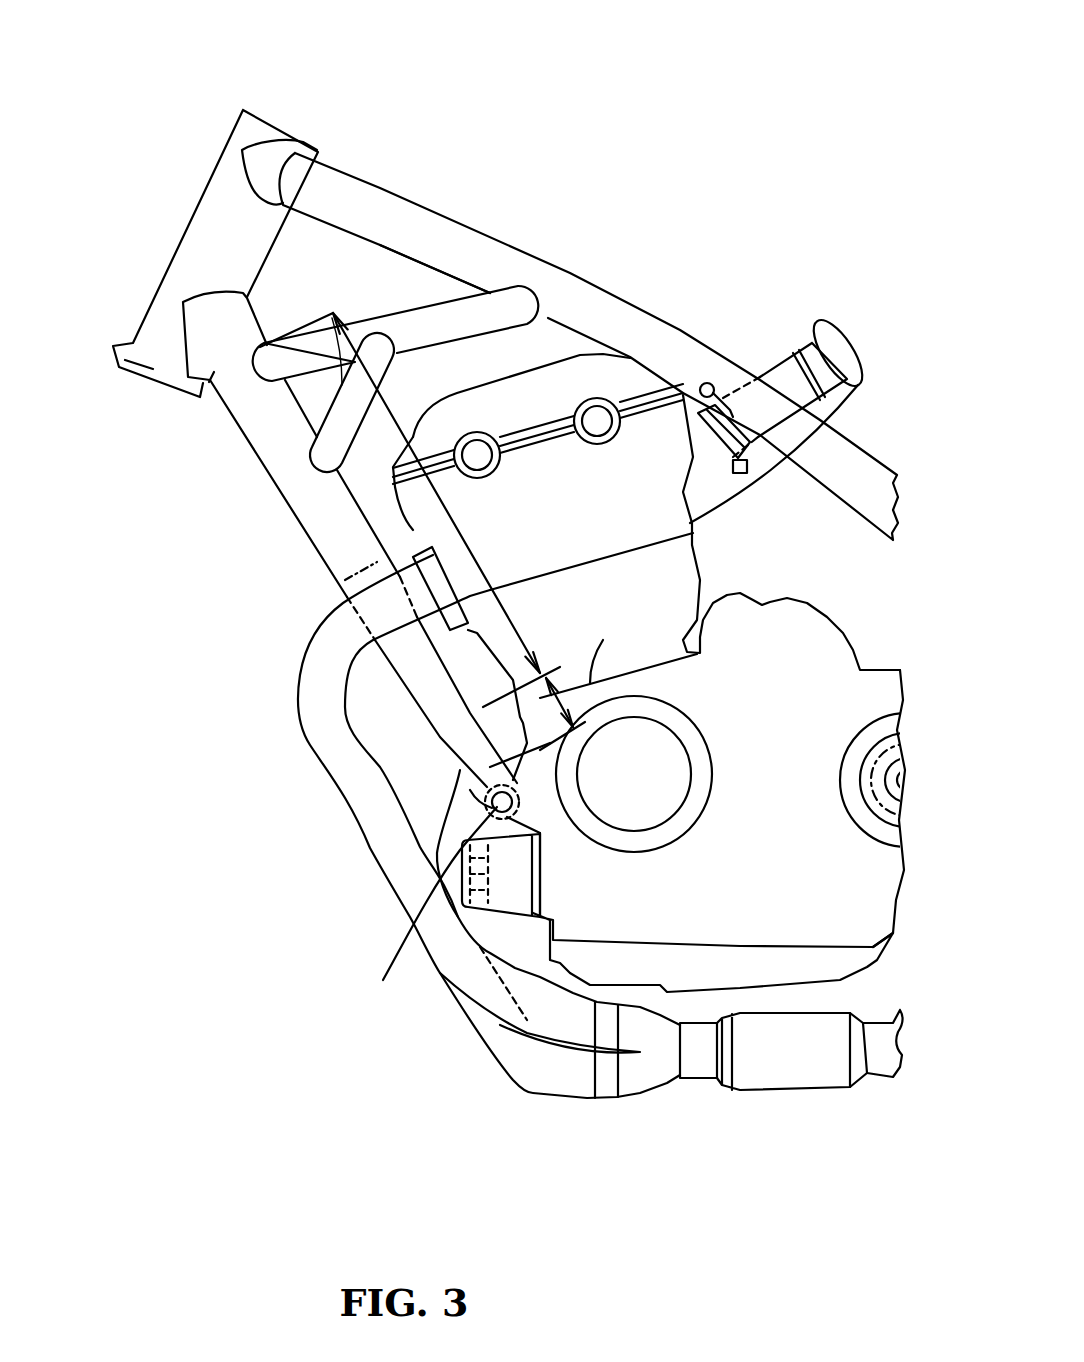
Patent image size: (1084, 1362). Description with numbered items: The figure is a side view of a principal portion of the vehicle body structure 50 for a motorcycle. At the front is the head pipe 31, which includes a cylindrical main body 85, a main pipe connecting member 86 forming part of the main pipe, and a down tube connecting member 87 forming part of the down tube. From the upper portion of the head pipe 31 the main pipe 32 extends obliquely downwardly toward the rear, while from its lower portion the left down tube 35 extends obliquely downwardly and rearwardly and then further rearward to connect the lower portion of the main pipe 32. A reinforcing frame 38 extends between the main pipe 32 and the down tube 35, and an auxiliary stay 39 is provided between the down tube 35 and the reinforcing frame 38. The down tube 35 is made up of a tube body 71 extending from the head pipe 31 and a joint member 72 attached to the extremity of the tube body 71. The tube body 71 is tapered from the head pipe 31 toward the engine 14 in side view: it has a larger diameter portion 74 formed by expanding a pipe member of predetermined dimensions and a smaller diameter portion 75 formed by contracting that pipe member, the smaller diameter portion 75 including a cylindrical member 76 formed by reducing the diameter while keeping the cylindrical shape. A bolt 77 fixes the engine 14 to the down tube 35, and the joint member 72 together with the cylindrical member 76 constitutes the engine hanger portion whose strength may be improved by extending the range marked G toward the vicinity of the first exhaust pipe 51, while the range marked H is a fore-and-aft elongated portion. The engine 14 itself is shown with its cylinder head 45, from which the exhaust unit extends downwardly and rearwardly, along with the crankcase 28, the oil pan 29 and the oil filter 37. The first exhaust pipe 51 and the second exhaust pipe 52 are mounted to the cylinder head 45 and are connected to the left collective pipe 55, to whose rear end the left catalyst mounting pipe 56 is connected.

The vehicle body structure 50 is at (244, 51).
The head pipe 31 is at (149, 226).
The cylindrical main body 85 is at (213, 200).
The main pipe connecting member 86 is at (285, 150).
The down tube connecting member 87 is at (197, 358).
The main pipe 32 is at (578, 272).
The reinforcing frame 38 is at (480, 290).
The auxiliary stay 39 is at (427, 307).
The tube body 71 is at (258, 797).
The larger diameter portion 74 is at (298, 483).
The smaller diameter portion 75 is at (410, 663).
The cylindrical member 76 is at (468, 753).
The bolt 77 is at (383, 980).
The cylinder head 45 is at (833, 430).
The down tube 35 is at (195, 816).
The first exhaust pipe 51 is at (370, 827).
The joint member 72 is at (493, 770).
The oil filter 37 is at (427, 960).
The engine 14 is at (517, 971).
The second exhaust pipe 52 is at (533, 1073).
The left collective pipe 55 is at (700, 1082).
The left catalyst mounting pipe 56 is at (790, 1093).
The oil pan 29 is at (752, 965).
The crankcase 28 is at (812, 947).